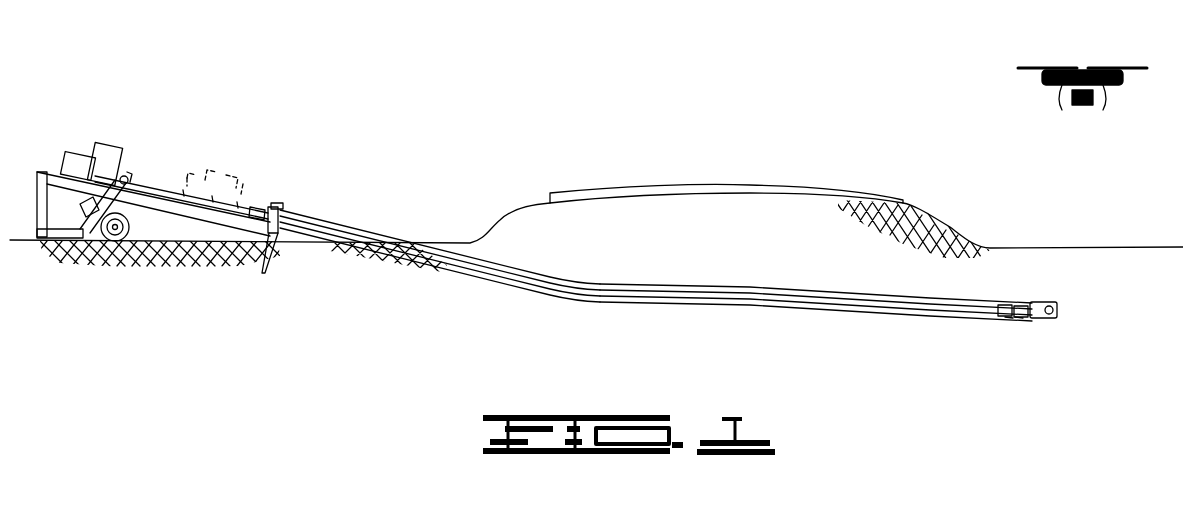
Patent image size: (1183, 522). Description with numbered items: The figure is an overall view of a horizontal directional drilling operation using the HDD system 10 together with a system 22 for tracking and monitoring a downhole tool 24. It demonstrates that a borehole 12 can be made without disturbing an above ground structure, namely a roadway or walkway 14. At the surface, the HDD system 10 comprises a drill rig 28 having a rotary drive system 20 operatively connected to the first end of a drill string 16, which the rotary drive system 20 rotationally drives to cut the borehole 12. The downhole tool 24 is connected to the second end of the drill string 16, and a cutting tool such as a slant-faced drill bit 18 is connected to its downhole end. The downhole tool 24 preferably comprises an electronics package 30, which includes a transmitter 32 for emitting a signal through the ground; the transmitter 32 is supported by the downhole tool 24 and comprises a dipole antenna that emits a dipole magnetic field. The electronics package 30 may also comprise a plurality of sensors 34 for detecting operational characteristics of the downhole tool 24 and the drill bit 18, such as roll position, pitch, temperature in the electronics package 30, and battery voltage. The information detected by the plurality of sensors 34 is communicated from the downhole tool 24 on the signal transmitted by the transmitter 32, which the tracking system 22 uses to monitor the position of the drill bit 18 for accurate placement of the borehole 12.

The HDD system 10 is at (250, 123).
The borehole 12 is at (895, 293).
The roadway or walkway 14 is at (680, 183).
The drill string 16 is at (373, 237).
The drill bit 18 is at (1048, 318).
The rotary drive system 20 is at (117, 149).
The tracking system 22 is at (1018, 57).
The downhole tool 24 is at (1018, 320).
The drill rig 28 is at (40, 172).
The electronics package 30 is at (1027, 317).
The transmitter 32 is at (1003, 318).
The plurality of sensors 34 is at (1032, 303).